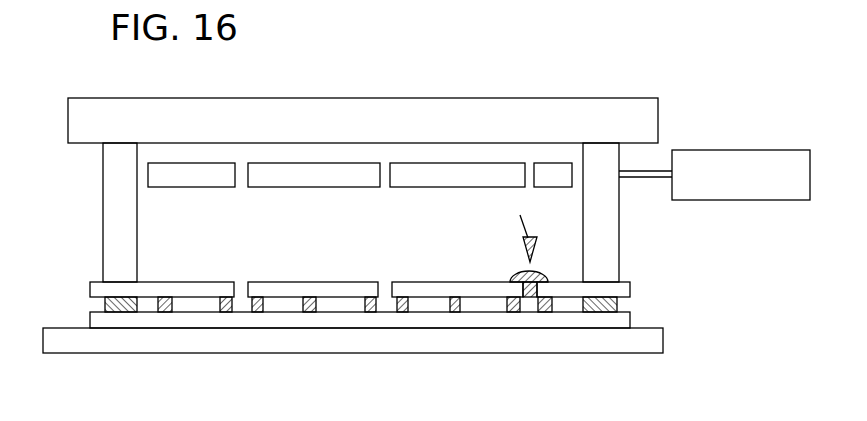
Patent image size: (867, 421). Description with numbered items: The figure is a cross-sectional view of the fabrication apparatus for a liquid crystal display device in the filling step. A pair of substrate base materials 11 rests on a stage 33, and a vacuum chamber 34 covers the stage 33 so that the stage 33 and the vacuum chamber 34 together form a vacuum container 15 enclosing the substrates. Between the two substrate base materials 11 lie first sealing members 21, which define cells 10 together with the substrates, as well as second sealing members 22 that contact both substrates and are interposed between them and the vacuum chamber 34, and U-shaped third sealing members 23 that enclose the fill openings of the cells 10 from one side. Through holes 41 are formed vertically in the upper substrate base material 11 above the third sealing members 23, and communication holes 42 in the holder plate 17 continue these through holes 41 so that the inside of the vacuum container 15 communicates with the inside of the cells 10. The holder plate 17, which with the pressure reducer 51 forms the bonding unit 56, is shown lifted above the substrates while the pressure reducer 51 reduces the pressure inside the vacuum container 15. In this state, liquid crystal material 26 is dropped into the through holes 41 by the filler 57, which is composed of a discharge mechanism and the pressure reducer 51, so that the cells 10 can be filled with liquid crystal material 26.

The cell 10 is at (192, 303).
The substrate base material 11 is at (623, 290).
The vacuum container 15 is at (380, 233).
The holder plate 17 is at (553, 175).
The first sealing member 21 is at (225, 312).
The second sealing member 22 is at (105, 305).
The third sealing member 23 is at (257, 308).
The liquid crystal material 26 is at (538, 272).
The stage 33 is at (623, 343).
The vacuum chamber 34 is at (336, 112).
The through hole 41 is at (245, 290).
The communication hole 42 is at (235, 177).
The pressure reducer 51 is at (765, 150).
The bonding unit 56 is at (585, 119).
The filler 57 is at (521, 224).